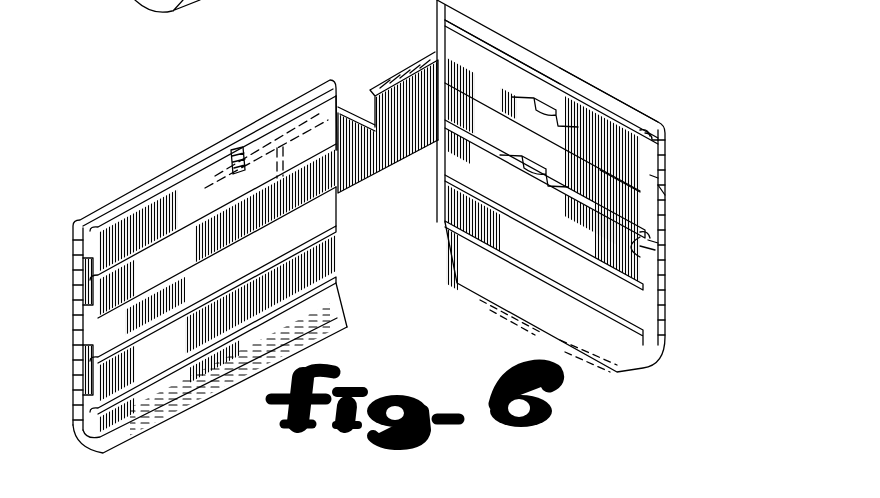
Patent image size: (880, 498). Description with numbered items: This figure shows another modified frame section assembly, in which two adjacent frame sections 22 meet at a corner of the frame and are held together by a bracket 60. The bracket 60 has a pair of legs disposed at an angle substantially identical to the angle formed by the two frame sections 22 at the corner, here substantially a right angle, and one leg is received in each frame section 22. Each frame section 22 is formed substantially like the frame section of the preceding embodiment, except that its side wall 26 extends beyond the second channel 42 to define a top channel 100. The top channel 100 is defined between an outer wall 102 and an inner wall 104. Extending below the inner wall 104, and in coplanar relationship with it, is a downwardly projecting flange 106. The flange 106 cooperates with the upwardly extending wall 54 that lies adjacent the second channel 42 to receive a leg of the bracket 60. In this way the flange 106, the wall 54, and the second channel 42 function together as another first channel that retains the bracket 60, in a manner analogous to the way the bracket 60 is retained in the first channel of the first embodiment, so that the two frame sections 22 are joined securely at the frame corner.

The frame section 22 is at (399, 226).
The side wall 26 is at (732, 176).
The second channel 42 is at (654, 235).
The upwardly extending wall 54 is at (648, 257).
The bracket 60 is at (385, 182).
The top channel 100 is at (654, 136).
The outer wall 102 is at (600, 93).
The inner wall 104 is at (551, 86).
The downwardly projecting flange 106 is at (627, 191).